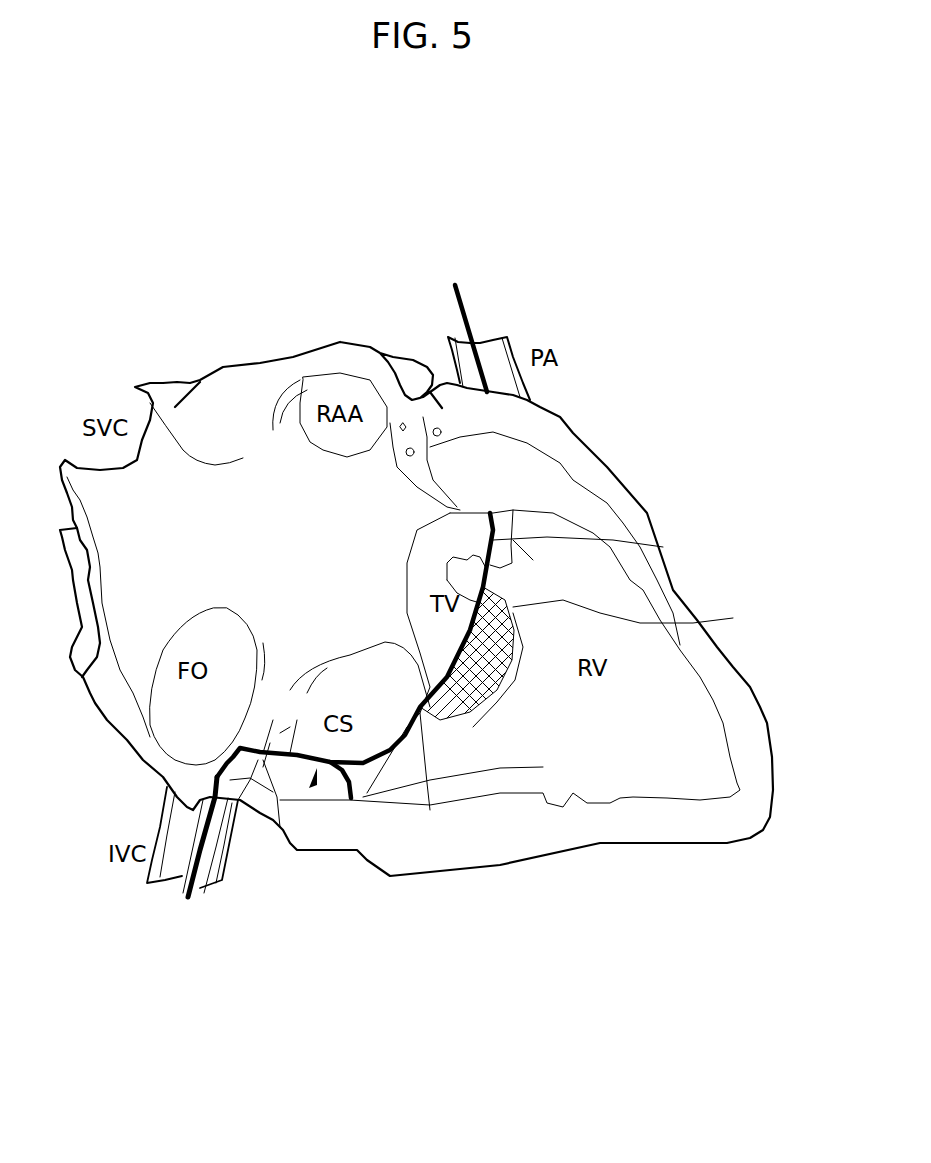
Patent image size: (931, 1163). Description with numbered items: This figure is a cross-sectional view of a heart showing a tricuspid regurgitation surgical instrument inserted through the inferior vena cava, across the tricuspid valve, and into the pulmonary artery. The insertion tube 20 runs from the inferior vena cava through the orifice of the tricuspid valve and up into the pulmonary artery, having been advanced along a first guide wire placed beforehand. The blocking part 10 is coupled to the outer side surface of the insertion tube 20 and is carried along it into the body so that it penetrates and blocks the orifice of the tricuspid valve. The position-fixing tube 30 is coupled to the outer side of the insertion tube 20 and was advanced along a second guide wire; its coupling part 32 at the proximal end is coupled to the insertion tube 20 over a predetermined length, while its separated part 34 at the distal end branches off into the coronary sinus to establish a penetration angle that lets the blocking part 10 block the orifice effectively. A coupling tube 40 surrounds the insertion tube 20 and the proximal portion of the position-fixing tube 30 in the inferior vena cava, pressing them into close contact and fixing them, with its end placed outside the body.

The blocking part 10 is at (733, 618).
The insertion tube 20 is at (663, 548).
The position-fixing tube 30 is at (311, 791).
The coupling part 32 is at (263, 762).
The separated part 34 is at (322, 805).
The coupling tube 40 is at (185, 843).